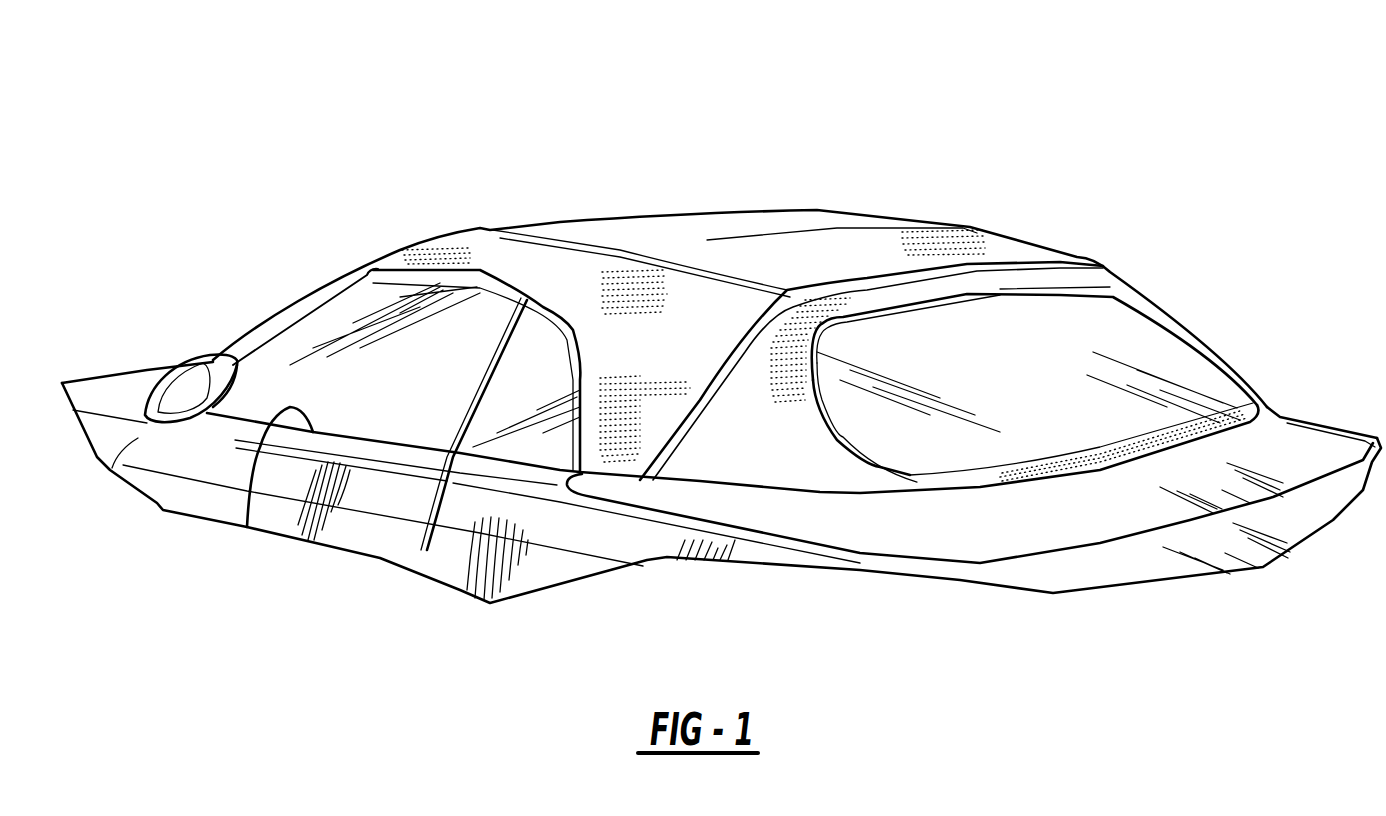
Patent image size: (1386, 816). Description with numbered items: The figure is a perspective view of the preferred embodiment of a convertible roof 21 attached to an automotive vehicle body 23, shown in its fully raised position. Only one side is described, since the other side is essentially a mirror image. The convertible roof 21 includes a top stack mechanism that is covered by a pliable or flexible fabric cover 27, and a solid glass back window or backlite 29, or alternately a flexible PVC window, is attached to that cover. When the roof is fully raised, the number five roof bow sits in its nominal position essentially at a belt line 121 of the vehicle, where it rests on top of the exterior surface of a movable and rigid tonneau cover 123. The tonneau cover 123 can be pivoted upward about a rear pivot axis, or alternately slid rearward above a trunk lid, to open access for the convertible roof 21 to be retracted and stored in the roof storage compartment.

The convertible roof 21 is at (863, 145).
The fabric cover 27 is at (678, 227).
The backlite 29 is at (987, 380).
The tonneau cover 123 is at (1317, 437).
The belt line 121 is at (247, 528).
The automotive vehicle body 23 is at (543, 577).